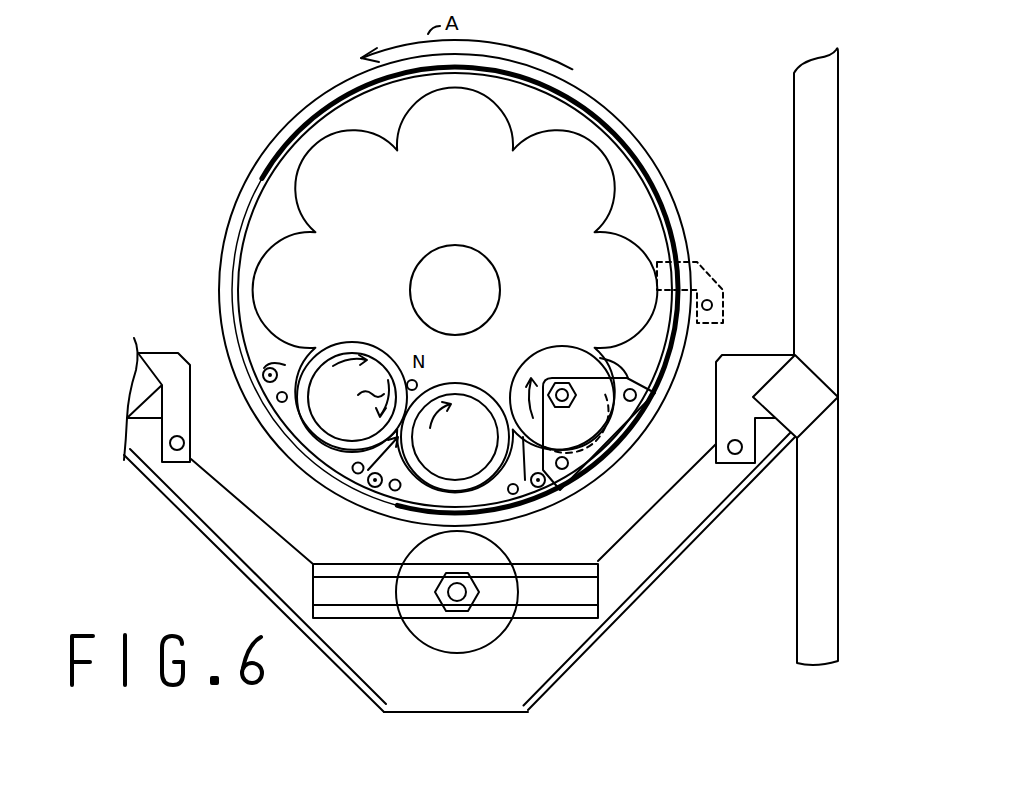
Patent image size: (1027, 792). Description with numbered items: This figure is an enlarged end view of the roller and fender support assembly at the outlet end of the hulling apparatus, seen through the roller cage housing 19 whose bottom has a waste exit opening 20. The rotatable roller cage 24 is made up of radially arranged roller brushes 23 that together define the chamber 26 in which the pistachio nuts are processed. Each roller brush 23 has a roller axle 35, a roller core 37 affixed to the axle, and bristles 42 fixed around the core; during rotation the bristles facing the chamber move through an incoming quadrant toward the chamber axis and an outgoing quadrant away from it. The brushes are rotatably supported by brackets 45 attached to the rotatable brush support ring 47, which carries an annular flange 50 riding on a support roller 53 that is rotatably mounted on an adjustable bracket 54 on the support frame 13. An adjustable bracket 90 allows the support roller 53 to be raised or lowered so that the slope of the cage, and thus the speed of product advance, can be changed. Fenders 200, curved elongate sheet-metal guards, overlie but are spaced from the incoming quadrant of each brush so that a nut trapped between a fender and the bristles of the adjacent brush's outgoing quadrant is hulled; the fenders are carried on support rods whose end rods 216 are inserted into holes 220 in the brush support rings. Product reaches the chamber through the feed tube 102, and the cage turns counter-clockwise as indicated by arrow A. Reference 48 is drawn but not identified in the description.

The support frame 13 is at (840, 210).
The roller cage housing 19 is at (610, 628).
The waste exit opening 20 is at (460, 712).
The roller brush 23 is at (567, 358).
The roller cage 24 is at (602, 98).
The chamber 26 is at (467, 177).
The roller axle 35 is at (576, 397).
The roller core 37 is at (568, 343).
The bristles 42 is at (478, 381).
The bracket 45 is at (605, 353).
The brush support ring 47 is at (642, 214).
The sensor 48 is at (723, 272).
The annular flange 50 is at (556, 487).
The support roller 53 is at (497, 643).
The adjustable bracket 54 is at (565, 620).
The adjustable bracket 90 is at (172, 425).
The tube 102 is at (470, 251).
The fender 200 is at (332, 340).
The cylindrical rod 216 is at (375, 488).
The holes 220 is at (365, 474).